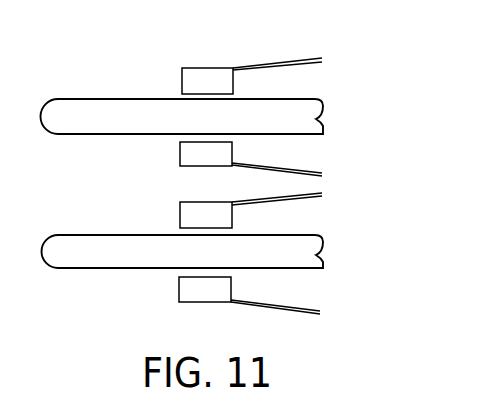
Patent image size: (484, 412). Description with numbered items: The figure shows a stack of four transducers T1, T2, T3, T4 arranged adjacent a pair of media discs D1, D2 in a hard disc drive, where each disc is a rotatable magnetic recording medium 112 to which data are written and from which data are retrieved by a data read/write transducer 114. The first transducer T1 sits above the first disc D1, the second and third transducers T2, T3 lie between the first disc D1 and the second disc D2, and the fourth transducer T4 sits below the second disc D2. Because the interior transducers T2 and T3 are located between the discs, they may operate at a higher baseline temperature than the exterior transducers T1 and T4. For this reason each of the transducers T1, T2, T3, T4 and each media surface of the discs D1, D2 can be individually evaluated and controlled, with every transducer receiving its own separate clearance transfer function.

The rotatable magnetic recording medium 112 is at (182, 94).
The data read/write transducer 114 is at (233, 58).
The first media disc D1 is at (200, 116).
The second media disc D2 is at (182, 251).
The first transducer T1 is at (205, 80).
The second transducer T2 is at (251, 159).
The third transducer T3 is at (251, 210).
The fourth transducer T4 is at (249, 295).